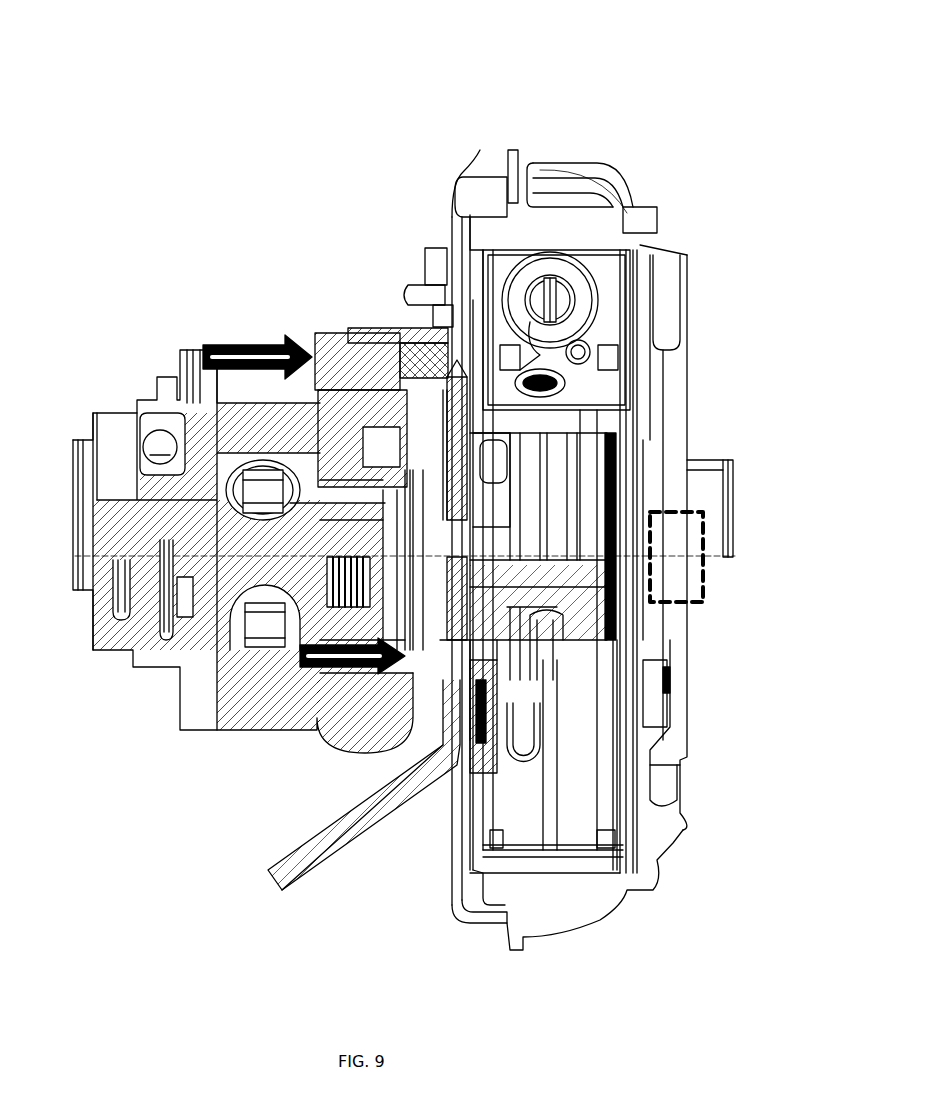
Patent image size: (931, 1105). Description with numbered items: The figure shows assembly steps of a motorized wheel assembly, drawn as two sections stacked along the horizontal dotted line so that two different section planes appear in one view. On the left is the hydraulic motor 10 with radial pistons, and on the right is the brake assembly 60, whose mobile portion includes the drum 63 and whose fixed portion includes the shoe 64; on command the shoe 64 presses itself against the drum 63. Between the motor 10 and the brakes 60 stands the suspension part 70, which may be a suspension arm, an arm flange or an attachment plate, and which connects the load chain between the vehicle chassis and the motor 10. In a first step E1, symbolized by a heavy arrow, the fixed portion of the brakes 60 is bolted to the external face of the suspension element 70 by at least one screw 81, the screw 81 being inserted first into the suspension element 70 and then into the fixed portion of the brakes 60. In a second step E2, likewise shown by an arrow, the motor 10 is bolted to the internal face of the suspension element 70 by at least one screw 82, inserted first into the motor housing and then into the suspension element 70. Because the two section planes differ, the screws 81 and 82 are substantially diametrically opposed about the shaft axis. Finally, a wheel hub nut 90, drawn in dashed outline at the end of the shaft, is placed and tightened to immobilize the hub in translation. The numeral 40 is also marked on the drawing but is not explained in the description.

The motor 10 is at (223, 287).
The electric motor 40 is at (707, 488).
The brakes 60 is at (634, 97).
The drum 63 is at (642, 255).
The shoe 64 is at (463, 173).
The suspension part 70 is at (455, 412).
The screw 81 is at (462, 659).
The screw 82 is at (333, 350).
The wheel hub nut 90 is at (707, 587).
The first step E1 is at (322, 656).
The second step E2 is at (203, 340).